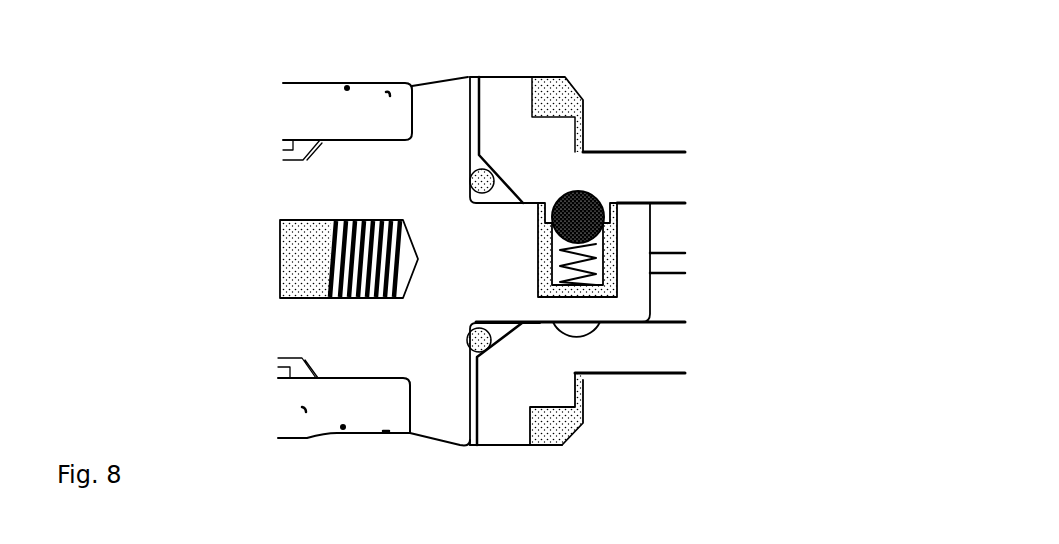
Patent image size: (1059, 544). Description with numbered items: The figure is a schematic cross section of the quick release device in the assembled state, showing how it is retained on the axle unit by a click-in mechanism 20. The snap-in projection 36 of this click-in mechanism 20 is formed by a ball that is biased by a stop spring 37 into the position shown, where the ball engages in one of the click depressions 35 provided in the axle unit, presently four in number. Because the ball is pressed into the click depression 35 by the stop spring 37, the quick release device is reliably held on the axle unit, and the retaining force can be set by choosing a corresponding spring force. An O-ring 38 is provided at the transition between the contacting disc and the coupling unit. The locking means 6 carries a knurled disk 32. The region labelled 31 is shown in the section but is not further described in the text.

The housing part 31 is at (348, 86).
The locking means 6 is at (515, 90).
The snap-in projection 36 is at (593, 195).
The click-in mechanism 20 is at (612, 192).
The O-ring 38 is at (471, 183).
The stop spring 37 is at (592, 268).
The click depression 35 is at (592, 336).
The knurled disk 32 is at (581, 425).